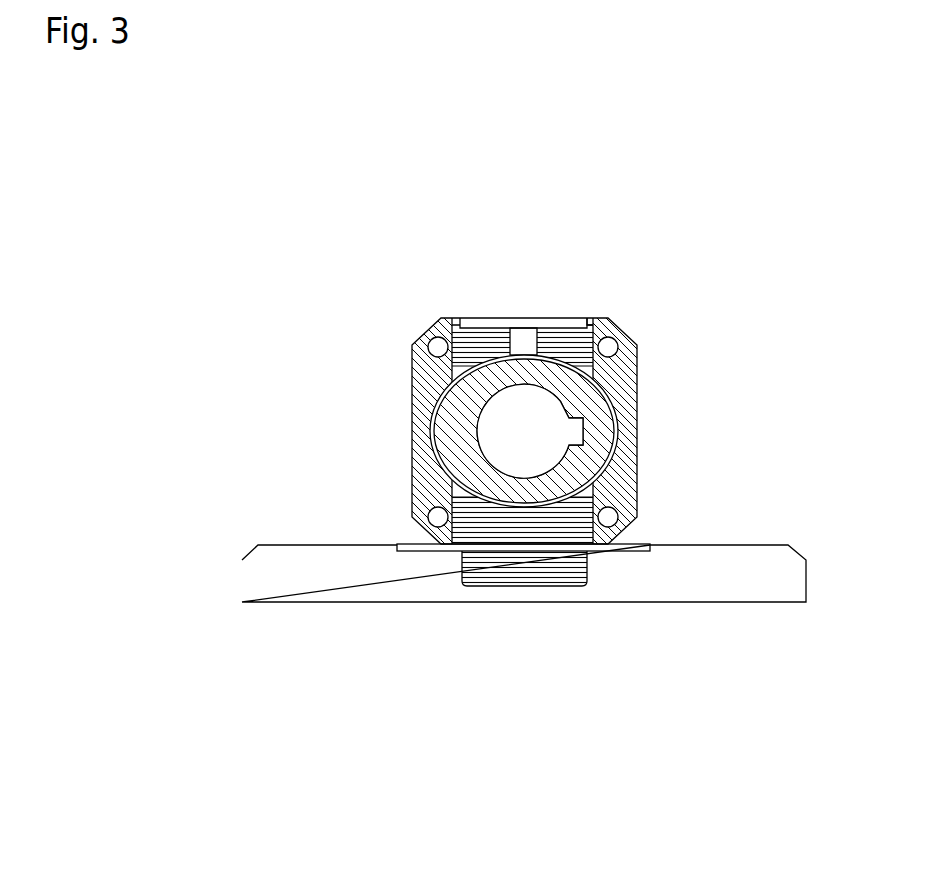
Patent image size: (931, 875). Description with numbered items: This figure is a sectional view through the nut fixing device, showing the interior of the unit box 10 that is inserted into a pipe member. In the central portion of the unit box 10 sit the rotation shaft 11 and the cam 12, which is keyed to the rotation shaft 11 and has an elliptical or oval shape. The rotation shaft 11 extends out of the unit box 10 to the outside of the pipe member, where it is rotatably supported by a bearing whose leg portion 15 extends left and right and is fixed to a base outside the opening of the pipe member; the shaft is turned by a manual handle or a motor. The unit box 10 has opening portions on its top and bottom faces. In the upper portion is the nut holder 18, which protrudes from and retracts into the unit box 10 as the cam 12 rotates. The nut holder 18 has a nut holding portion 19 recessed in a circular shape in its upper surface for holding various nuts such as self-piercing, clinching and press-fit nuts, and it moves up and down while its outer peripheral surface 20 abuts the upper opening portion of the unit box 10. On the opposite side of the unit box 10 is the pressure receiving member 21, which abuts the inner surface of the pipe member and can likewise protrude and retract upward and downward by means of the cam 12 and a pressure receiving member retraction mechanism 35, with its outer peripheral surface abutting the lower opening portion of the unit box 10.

The unit box 10 is at (632, 344).
The rotation shaft 11 is at (540, 405).
The cam 12 is at (587, 463).
The leg portion 15 is at (316, 560).
The nut holder 18 is at (480, 353).
The nut holding portion 19 is at (525, 322).
The outer peripheral surface 20 is at (588, 318).
The pressure receiving member 21 is at (520, 567).
The pressure receiving member retraction mechanism 35 is at (430, 551).